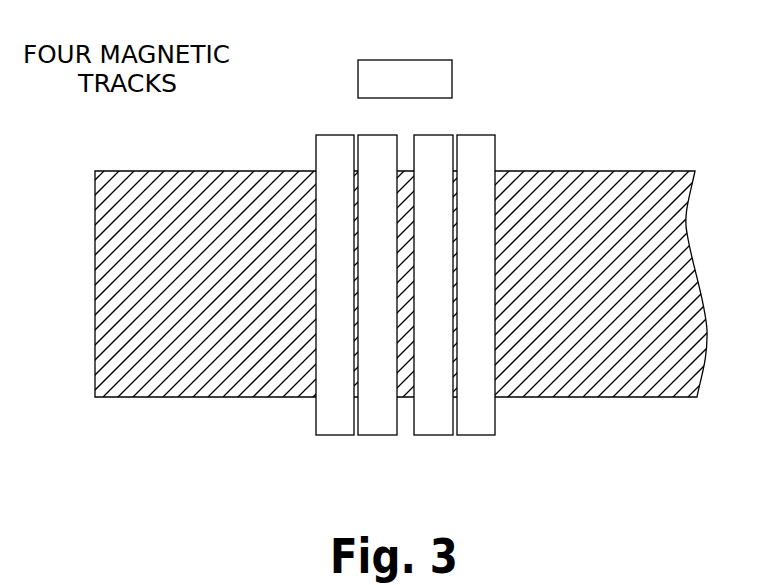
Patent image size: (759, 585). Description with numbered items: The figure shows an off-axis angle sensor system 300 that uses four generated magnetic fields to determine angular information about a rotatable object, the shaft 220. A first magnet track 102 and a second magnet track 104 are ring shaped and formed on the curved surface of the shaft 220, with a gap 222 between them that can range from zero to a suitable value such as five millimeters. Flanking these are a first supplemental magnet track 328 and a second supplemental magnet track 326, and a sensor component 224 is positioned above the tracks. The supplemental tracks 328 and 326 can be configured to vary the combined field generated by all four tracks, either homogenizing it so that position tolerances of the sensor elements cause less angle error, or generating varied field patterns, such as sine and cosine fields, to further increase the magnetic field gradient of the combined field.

The off-axis angle sensor system 300 is at (185, 492).
The shaft 220 is at (142, 397).
The first supplemental magnet track 328 is at (337, 438).
The first magnet track 102 is at (365, 133).
The second magnet track 104 is at (448, 133).
The second supplemental magnet track 326 is at (475, 435).
The sensor component 224 is at (405, 59).
The gap 222 is at (405, 455).